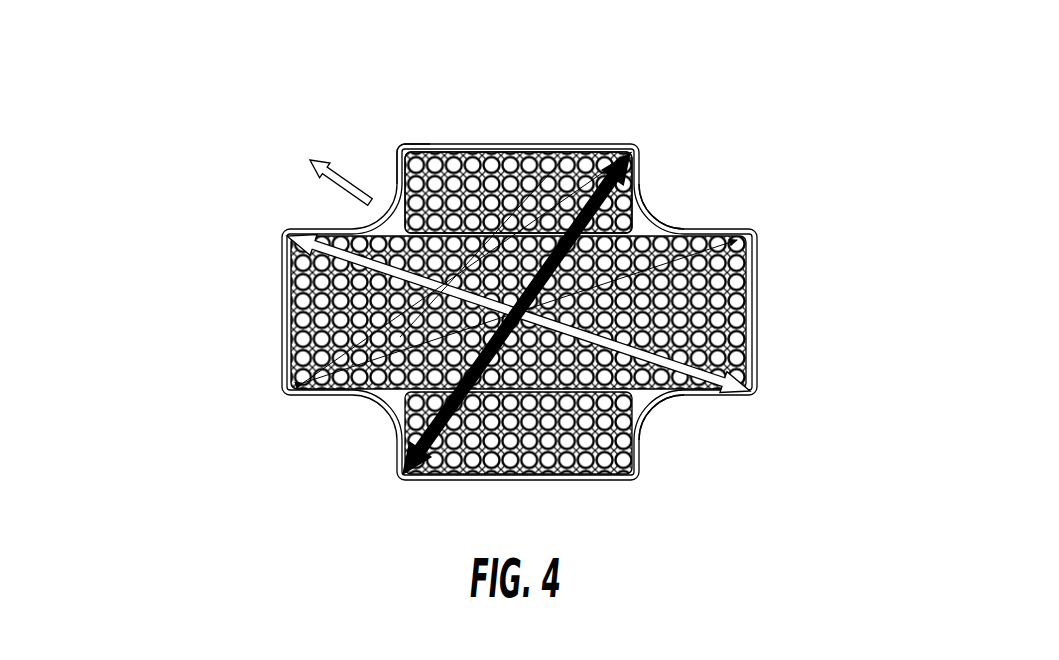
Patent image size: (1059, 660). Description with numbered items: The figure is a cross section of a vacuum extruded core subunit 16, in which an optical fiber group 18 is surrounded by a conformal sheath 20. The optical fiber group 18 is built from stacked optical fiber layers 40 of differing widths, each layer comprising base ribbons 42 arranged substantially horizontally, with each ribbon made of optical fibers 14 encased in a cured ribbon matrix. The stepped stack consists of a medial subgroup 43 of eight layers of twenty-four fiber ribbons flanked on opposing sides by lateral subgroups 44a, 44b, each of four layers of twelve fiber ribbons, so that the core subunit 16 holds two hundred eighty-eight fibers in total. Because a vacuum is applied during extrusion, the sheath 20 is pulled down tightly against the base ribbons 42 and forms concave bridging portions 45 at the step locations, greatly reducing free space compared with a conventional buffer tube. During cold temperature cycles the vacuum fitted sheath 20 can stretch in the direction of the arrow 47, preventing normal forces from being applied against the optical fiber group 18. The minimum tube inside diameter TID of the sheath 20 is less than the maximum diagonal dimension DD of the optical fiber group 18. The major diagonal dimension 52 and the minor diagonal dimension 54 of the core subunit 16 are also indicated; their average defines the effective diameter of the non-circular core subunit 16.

The optical fibers 14 is at (510, 164).
The core subunit 16 is at (465, 288).
The optical fiber group 18 is at (519, 279).
The sheath 20 is at (397, 148).
The optical fiber layer 40 is at (465, 273).
The base ribbons 42 is at (286, 343).
The medial subgroup 43 is at (459, 312).
The lateral subgroup 44a is at (619, 152).
The lateral subgroup 44b is at (766, 394).
The concave bridging portions 45 is at (669, 202).
The arrow 47 is at (327, 168).
The major diagonal dimension 52 is at (708, 406).
The minor diagonal dimension 54 is at (436, 478).
The maximum diagonal dimension DD is at (292, 397).
The minimum tube inside diameter TID is at (394, 401).